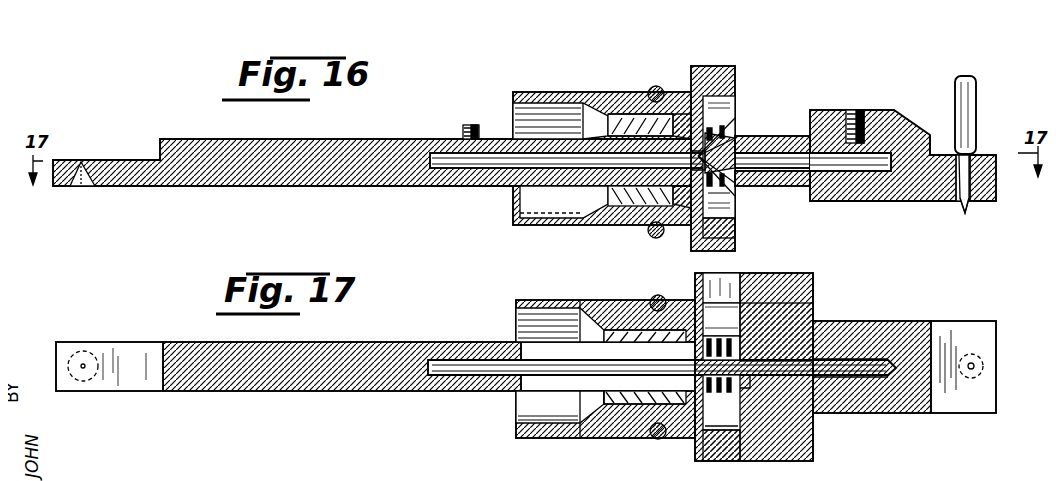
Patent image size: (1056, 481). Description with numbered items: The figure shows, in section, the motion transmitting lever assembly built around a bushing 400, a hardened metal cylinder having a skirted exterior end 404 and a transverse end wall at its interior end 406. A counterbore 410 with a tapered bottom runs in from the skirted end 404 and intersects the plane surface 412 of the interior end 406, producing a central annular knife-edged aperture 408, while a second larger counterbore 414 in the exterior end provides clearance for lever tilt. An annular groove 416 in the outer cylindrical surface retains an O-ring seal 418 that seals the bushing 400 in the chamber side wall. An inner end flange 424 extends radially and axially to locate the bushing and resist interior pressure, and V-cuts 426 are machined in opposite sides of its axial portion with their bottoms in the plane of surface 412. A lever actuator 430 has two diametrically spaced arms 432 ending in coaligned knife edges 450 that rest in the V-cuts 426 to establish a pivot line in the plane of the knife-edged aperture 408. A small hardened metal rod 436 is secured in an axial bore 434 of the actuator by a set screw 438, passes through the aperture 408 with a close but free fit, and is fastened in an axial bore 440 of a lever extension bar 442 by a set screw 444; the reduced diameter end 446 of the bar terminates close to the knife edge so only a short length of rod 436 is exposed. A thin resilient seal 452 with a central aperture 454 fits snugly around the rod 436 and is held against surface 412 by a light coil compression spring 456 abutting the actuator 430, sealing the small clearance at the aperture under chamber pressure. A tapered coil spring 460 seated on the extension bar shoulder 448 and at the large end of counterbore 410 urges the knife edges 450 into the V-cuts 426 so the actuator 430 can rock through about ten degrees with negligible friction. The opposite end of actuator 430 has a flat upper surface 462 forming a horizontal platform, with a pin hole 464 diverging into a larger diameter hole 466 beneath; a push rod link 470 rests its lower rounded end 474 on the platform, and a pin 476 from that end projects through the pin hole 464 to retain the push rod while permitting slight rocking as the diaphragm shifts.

In FIG. 17, the bushing 400 is at (600, 430).
In FIG. 16, the skirted exterior end 404 is at (506, 87).
In FIG. 17, the skirted exterior end 404 is at (512, 430).
In FIG. 16, the interior end 406 is at (738, 84).
In FIG. 17, the interior end 406 is at (735, 418).
In FIG. 16, the knife-edged aperture 408 is at (680, 150).
In FIG. 17, the knife-edged aperture 408 is at (721, 402).
In FIG. 16, the counterbore 410 is at (668, 185).
In FIG. 17, the counterbore 410 is at (626, 396).
In FIG. 16, the plane surface 412 is at (730, 200).
In FIG. 17, the plane surface 412 is at (721, 319).
In FIG. 16, the second larger counterbore 414 is at (516, 212).
In FIG. 17, the second larger counterbore 414 is at (510, 413).
In FIG. 16, the annular groove 416 is at (641, 228).
In FIG. 17, the annular groove 416 is at (658, 431).
In FIG. 16, the O-ring seal 418 is at (650, 230).
In FIG. 17, the O-ring seal 418 is at (654, 286).
In FIG. 16, the inner end flange 424 is at (728, 224).
In FIG. 17, the inner end flange 424 is at (732, 414).
In FIG. 16, the V-cuts 426 is at (730, 187).
In FIG. 17, the V-cuts 426 is at (735, 270).
In FIG. 16, the lever actuator 430 is at (878, 186).
In FIG. 17, the lever actuator 430 is at (848, 400).
In FIG. 16, the arms 432 is at (792, 182).
In FIG. 17, the arms 432 is at (803, 269).
In FIG. 16, the axial bore 434 is at (773, 133).
In FIG. 17, the axial bore 434 is at (796, 351).
In FIG. 16, the hardened metal rod 436 is at (812, 160).
In FIG. 17, the hardened metal rod 436 is at (838, 355).
In FIG. 16, the set screw 438 is at (858, 104).
In FIG. 16, the axial bore 440 is at (488, 145).
In FIG. 17, the axial bore 440 is at (536, 352).
In FIG. 16, the lever extension bar 442 is at (385, 168).
In FIG. 17, the lever extension bar 442 is at (342, 342).
In FIG. 16, the set screw 444 is at (458, 117).
In FIG. 16, the reduced diameter end 446 is at (632, 187).
In FIG. 17, the reduced diameter end 446 is at (580, 392).
In FIG. 16, the extension bar shoulder 448 is at (508, 178).
In FIG. 17, the extension bar shoulder 448 is at (513, 335).
In FIG. 16, the knife edges 450 is at (740, 102).
In FIG. 17, the knife edges 450 is at (686, 275).
In FIG. 16, the seal 452 is at (720, 157).
In FIG. 17, the seal 452 is at (690, 320).
In FIG. 16, the central aperture 454 is at (676, 119).
In FIG. 17, the central aperture 454 is at (734, 378).
In FIG. 16, the coil compression spring 456 is at (737, 116).
In FIG. 17, the coil compression spring 456 is at (776, 332).
In FIG. 16, the tapered coil spring 460 is at (624, 98).
In FIG. 17, the tapered coil spring 460 is at (645, 323).
In FIG. 16, the flat upper surface 462 is at (930, 130).
In FIG. 17, the flat upper surface 462 is at (955, 330).
In FIG. 16, the pin hole 464 is at (967, 147).
In FIG. 17, the pin hole 464 is at (968, 360).
In FIG. 16, the larger diameter hole 466 is at (968, 179).
In FIG. 17, the larger diameter hole 466 is at (978, 352).
In FIG. 16, the push rod link 470 is at (968, 89).
In FIG. 16, the lower rounded end 474 is at (964, 135).
In FIG. 16, the pin 476 is at (956, 204).